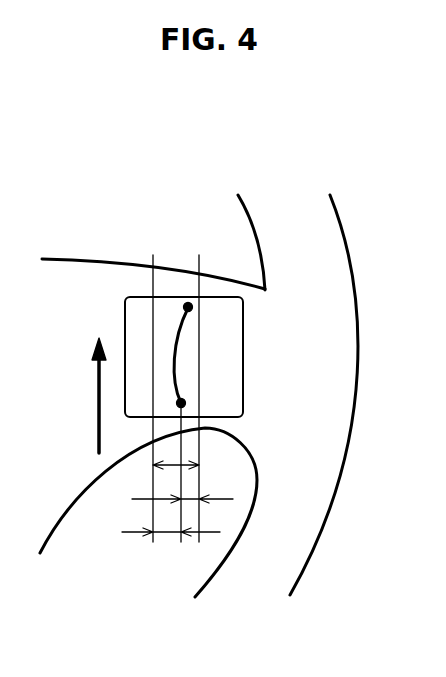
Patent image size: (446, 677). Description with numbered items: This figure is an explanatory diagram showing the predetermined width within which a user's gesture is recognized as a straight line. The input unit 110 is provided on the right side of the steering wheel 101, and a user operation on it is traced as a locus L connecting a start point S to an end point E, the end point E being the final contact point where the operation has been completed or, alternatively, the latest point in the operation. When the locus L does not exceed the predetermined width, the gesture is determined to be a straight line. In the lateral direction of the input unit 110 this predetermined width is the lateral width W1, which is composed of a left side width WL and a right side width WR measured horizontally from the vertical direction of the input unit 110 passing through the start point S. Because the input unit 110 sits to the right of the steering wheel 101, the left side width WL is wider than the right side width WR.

The steering wheel 101 is at (67, 280).
The input unit 110 is at (232, 323).
The locus L is at (174, 355).
The end point E is at (187, 303).
The start point S is at (181, 403).
The lateral width W1 is at (175, 468).
The right side width WR is at (192, 502).
The left side width WL is at (170, 533).